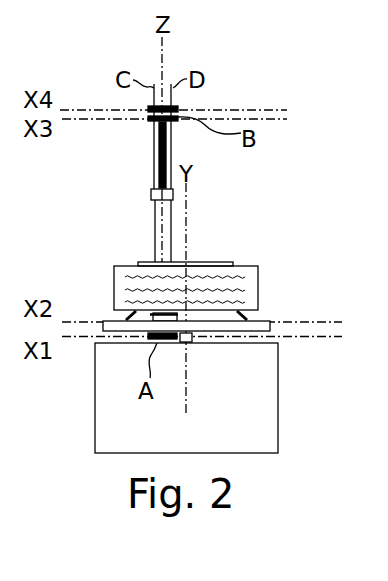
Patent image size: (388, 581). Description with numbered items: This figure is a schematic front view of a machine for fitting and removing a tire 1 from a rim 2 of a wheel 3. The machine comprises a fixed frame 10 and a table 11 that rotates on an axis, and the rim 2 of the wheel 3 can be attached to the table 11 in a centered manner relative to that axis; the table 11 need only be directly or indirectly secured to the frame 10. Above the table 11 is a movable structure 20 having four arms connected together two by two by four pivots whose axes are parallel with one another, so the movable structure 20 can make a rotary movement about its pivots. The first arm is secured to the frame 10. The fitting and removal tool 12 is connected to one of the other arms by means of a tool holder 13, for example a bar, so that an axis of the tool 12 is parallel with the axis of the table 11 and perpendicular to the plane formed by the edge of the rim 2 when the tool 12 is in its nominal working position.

The tire 1 is at (253, 284).
The rim 2 is at (224, 262).
The wheel 3 is at (252, 251).
The fixed frame 10 is at (278, 419).
The table 11 is at (268, 325).
The fitting and removal tool 12 is at (151, 194).
The tool holder 13 is at (157, 147).
The movable structure 20 is at (278, 47).